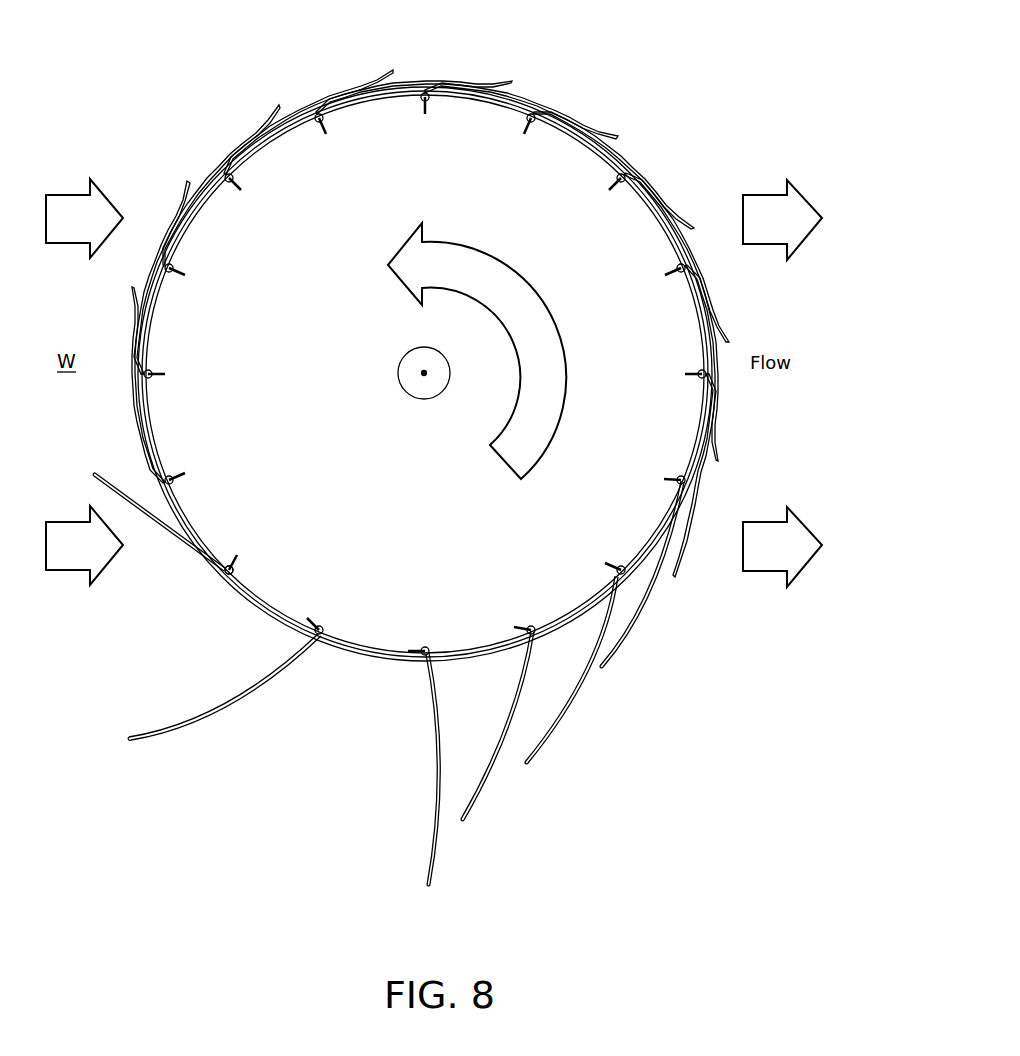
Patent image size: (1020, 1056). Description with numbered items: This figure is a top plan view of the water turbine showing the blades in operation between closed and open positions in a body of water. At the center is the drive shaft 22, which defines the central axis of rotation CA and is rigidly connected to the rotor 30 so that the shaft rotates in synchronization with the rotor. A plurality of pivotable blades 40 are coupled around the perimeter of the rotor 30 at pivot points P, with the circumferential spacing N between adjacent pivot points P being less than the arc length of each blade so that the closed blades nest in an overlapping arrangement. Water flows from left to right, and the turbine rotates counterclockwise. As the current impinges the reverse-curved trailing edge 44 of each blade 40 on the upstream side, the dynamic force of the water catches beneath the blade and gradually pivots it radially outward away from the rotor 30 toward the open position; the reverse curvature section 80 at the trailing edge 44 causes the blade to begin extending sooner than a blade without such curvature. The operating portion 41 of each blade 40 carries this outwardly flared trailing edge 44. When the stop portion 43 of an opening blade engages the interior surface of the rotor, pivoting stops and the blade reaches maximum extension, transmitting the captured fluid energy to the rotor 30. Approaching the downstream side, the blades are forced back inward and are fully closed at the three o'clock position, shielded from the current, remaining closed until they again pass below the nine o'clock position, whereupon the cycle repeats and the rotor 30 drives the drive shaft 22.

The drive shaft 22 is at (433, 399).
The central axis of rotation CA is at (422, 373).
The rotor 30 is at (160, 500).
The stop portion 43 is at (310, 626).
The operating portion 41 is at (148, 738).
The reverse curvature section 80 is at (438, 857).
The blade 40 is at (532, 743).
The trailing edge 44 is at (419, 890).
The pivot point P is at (432, 101).
The circumferential spacing N is at (557, 74).